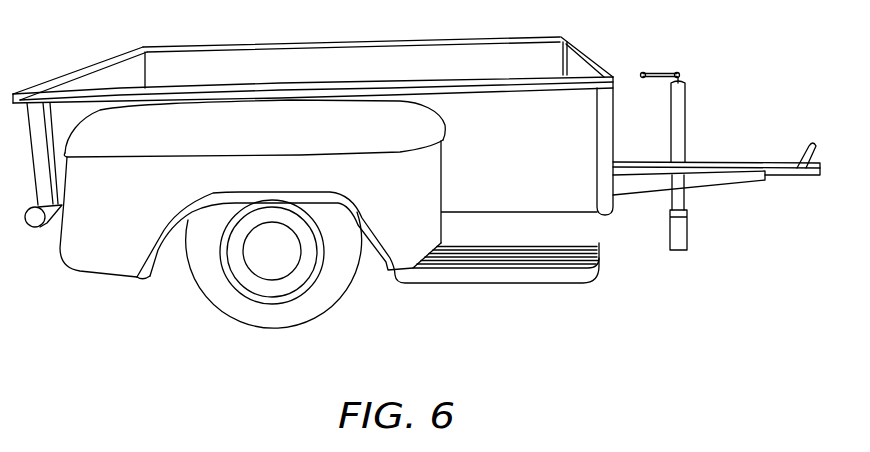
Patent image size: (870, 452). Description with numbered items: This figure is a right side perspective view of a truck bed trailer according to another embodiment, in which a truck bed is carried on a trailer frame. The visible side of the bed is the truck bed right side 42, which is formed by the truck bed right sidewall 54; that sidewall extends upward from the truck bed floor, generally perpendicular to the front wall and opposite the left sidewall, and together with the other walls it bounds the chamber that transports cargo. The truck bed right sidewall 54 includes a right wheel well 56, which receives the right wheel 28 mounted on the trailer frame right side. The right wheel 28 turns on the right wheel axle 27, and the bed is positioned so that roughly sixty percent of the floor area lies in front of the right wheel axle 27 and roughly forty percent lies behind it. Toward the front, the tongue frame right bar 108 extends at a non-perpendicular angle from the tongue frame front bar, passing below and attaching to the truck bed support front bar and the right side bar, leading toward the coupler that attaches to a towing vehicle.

The right wheel axle 27 is at (262, 262).
The right wheel 28 is at (285, 315).
The right wheel well 56 is at (369, 255).
The truck bed right side 42 is at (545, 279).
The truck bed right sidewall 54 is at (537, 213).
The tongue frame right bar 108 is at (632, 192).